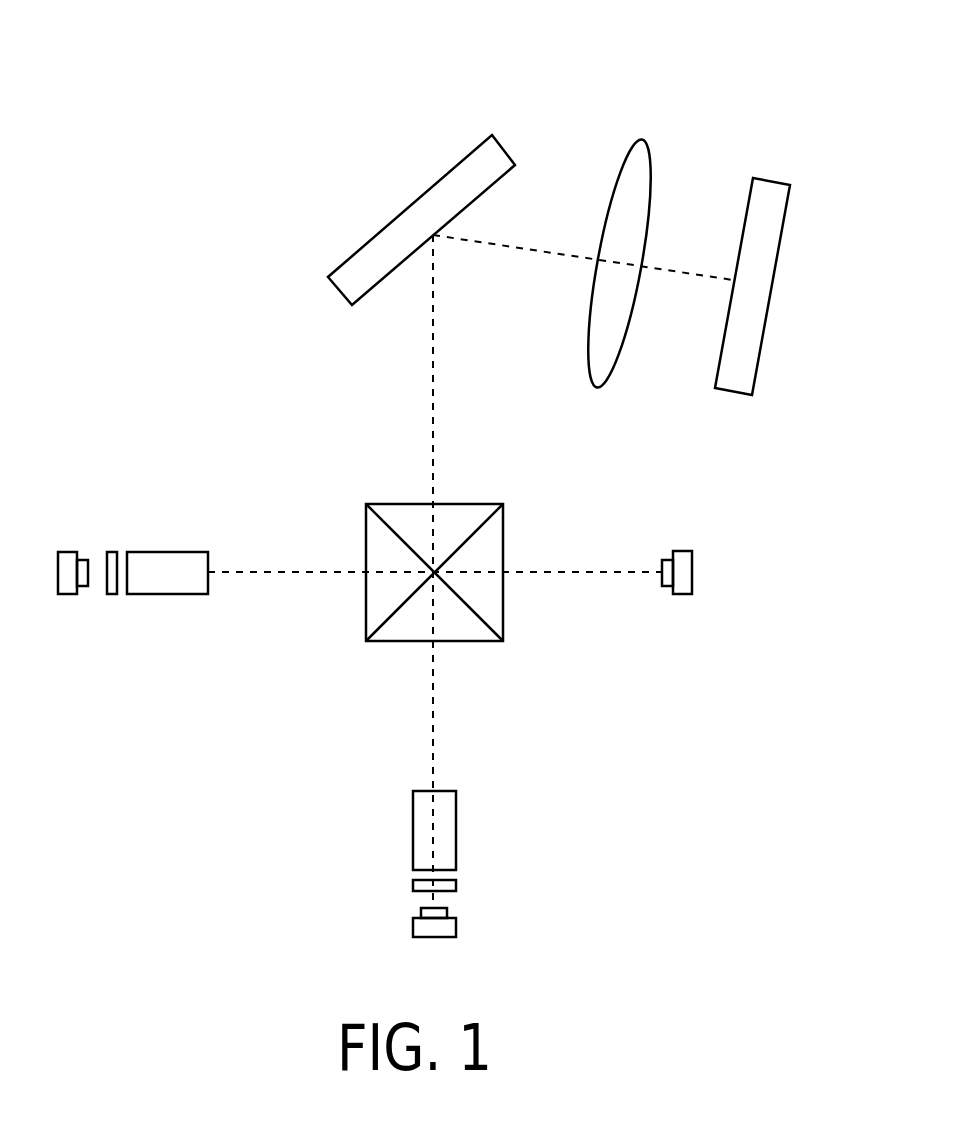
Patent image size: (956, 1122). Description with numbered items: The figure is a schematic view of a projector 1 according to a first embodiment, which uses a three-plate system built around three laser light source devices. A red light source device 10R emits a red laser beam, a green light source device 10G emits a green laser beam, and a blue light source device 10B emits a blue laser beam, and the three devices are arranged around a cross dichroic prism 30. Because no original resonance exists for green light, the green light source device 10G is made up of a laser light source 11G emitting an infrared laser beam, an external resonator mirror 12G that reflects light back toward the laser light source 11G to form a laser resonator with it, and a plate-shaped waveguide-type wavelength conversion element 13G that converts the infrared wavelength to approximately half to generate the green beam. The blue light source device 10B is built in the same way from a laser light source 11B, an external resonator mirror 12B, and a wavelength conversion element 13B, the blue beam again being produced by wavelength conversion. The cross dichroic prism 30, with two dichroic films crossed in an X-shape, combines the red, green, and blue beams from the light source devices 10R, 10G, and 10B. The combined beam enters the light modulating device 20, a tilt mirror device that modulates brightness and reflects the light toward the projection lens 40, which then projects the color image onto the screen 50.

The projector 1 is at (107, 137).
The blue light source device 10B is at (118, 552).
The laser light source 11B is at (65, 596).
The external resonator mirror 12B is at (112, 596).
The wavelength conversion element 13B is at (167, 596).
The green light source device 10G is at (565, 864).
The laser light source 11G is at (456, 930).
The external resonator mirror 12G is at (456, 885).
The wavelength conversion element 13G is at (456, 830).
The red light source device 10R is at (697, 510).
The light modulating device 20 is at (424, 198).
The cross dichroic prism 30 is at (482, 504).
The projection lens 40 is at (642, 140).
The screen 50 is at (770, 181).